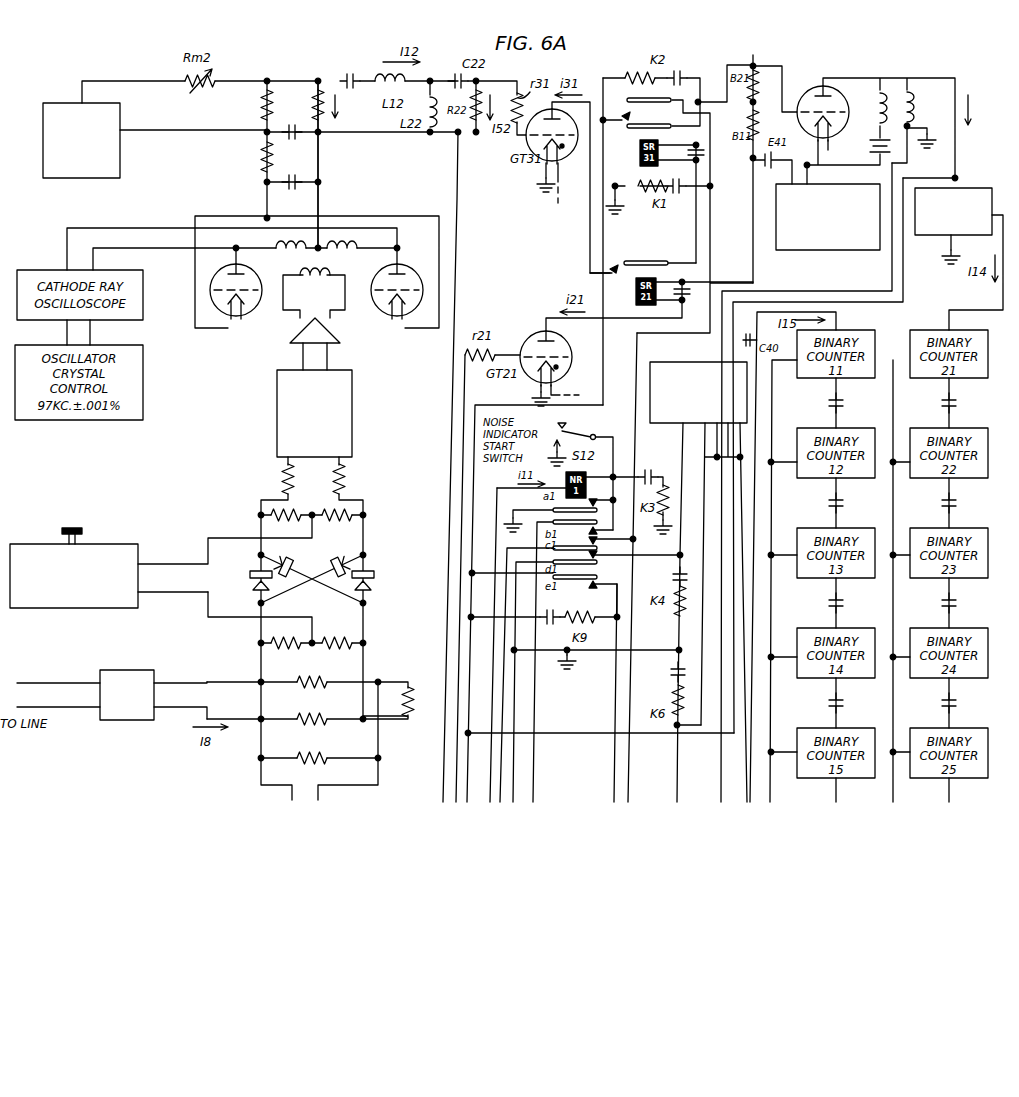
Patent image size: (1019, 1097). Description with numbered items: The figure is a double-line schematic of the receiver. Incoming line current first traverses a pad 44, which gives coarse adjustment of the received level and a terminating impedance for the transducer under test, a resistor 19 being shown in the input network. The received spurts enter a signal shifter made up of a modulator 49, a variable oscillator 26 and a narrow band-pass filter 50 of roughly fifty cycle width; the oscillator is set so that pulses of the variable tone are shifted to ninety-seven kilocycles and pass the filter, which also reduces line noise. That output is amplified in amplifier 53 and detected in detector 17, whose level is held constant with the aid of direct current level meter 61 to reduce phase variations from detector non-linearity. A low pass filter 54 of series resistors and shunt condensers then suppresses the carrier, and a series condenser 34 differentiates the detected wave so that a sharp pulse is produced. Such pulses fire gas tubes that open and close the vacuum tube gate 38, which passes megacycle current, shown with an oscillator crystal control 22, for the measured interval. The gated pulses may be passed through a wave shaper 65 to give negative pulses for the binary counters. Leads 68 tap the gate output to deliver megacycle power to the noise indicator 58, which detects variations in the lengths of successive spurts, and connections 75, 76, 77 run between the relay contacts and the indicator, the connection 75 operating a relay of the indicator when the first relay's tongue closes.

The direct current level meter 61 is at (120, 162).
The capacitor C12 34 is at (352, 62).
The low pass filter 54 is at (359, 163).
The detector 17 is at (253, 204).
The amplifier 53 is at (342, 338).
The band-pass filter 50 is at (352, 410).
The modulator 49 is at (269, 628).
The variable oscillator 26 is at (38, 544).
The pad 44 is at (125, 672).
The resistor 19 is at (410, 698).
The vacuum tube gate 38 is at (895, 119).
The wave shaper 65 is at (985, 190).
The oscillator crystal control 1000 KC 22 is at (812, 250).
The leads 68 is at (818, 303).
The noise indicator 58 is at (690, 362).
The connection 75 is at (684, 427).
The noise indicator output lead 76 is at (704, 432).
The noise indicator output lead 77 is at (716, 440).